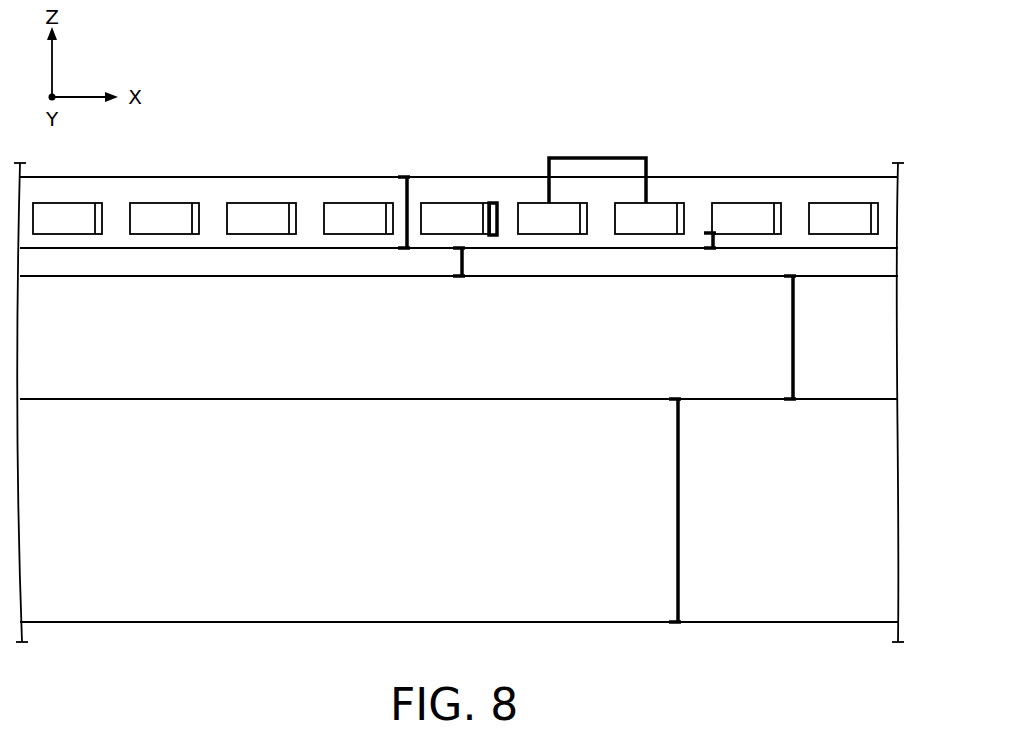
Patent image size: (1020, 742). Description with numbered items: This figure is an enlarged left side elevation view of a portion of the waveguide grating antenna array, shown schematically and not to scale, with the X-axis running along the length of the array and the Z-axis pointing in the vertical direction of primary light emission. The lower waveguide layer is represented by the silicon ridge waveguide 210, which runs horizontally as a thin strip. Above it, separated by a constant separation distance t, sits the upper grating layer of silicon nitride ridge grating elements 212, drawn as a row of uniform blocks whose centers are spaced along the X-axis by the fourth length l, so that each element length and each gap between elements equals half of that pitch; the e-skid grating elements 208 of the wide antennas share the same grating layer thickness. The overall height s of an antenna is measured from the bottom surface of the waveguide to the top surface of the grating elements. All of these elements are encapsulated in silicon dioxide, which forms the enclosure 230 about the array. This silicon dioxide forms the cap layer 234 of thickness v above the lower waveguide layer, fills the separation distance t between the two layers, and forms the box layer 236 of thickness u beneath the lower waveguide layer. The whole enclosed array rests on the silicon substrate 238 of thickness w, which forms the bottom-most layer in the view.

The e-skid grating elements 208 is at (873, 216).
The ridge waveguide 210 is at (643, 260).
The ridge grating elements 212 is at (840, 200).
The enclosure 230 is at (182, 177).
The cap layer 234 is at (341, 189).
The box layer 236 is at (264, 380).
The silicon substrate 238 is at (264, 604).
The cap layer thickness v is at (409, 194).
The fourth length l is at (599, 158).
The separation distance t is at (713, 243).
The height s is at (498, 222).
The box layer thickness u is at (795, 335).
The silicon substrate thickness w is at (680, 501).